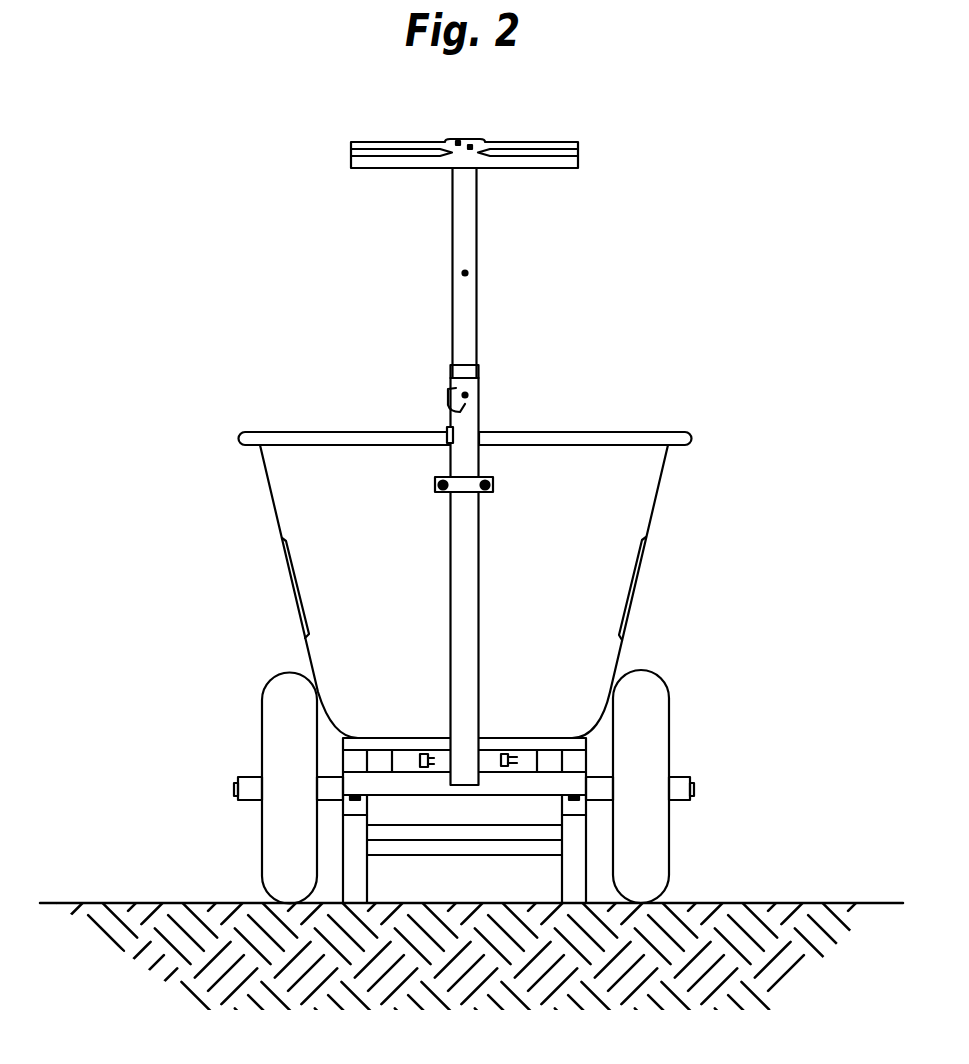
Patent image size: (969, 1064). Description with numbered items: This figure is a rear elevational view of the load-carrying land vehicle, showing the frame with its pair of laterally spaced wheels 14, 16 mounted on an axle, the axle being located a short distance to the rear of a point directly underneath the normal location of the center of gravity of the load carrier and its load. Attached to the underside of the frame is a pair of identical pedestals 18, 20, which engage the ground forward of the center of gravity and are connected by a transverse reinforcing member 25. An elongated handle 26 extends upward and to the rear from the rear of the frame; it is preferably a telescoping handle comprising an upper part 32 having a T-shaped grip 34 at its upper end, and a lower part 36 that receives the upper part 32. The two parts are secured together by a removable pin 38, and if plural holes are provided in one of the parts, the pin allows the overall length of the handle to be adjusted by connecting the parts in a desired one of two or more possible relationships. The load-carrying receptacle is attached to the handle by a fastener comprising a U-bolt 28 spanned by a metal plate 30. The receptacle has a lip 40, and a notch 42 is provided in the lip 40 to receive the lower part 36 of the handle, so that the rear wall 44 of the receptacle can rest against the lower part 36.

The wheel 14 is at (655, 692).
The wheel 16 is at (280, 690).
The pedestal 18 is at (570, 864).
The pedestal 20 is at (358, 866).
The transverse reinforcing member 25 is at (480, 844).
The elongated handle 26 is at (498, 388).
The U-bolt 28 is at (441, 491).
The metal plate 30 is at (465, 493).
The upper part 32 is at (453, 201).
The T-shaped grip 34 is at (578, 146).
The lower part 36 is at (462, 591).
The removable pin 38 is at (447, 398).
The lip 40 is at (612, 437).
The notch 42 is at (448, 430).
The rear wall 44 is at (588, 597).